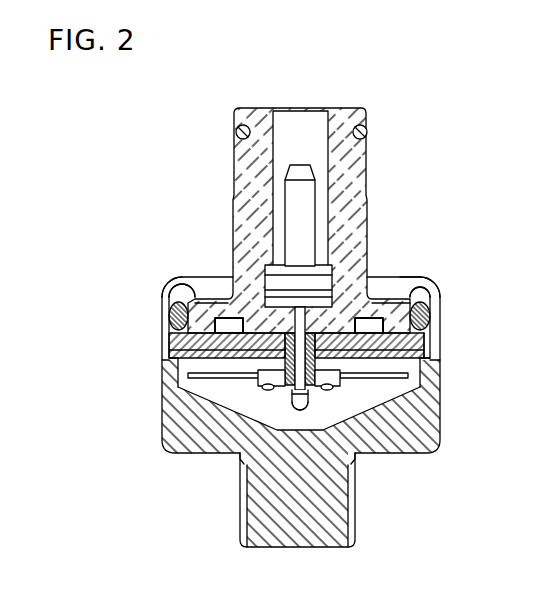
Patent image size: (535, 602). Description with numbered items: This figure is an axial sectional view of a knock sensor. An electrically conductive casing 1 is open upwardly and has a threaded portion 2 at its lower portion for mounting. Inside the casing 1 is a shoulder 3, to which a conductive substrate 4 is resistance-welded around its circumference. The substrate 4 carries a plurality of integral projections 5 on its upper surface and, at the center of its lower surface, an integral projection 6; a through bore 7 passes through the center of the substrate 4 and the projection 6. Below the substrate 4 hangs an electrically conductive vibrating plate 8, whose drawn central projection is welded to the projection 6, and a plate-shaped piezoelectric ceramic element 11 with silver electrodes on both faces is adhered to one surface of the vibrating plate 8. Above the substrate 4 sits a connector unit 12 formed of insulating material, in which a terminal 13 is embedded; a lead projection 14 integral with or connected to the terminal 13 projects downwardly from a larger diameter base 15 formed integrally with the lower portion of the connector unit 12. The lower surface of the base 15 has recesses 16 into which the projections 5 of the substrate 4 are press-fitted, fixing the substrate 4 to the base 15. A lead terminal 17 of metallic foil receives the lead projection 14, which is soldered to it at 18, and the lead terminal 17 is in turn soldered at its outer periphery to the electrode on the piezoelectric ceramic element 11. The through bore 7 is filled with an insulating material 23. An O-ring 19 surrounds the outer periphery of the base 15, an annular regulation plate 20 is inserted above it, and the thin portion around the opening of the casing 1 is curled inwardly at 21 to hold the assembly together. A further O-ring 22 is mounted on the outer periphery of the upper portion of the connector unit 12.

The casing 1 is at (428, 448).
The threaded portion 2 is at (340, 527).
The shoulder 3 is at (425, 365).
The conductive substrate 4 is at (421, 348).
The projections 5 is at (192, 282).
The projection 6 is at (218, 378).
The through bore 7 is at (182, 347).
The vibrating plate 8 is at (398, 376).
The piezoelectric ceramic element 11 is at (313, 382).
The connector unit 12 is at (368, 190).
The terminal 13 is at (296, 215).
The lead projection 14 is at (266, 389).
The base 15 is at (429, 297).
The recesses 16 is at (226, 318).
The lead terminal 17 is at (309, 398).
The solder 18 is at (303, 410).
The O-ring 19 is at (168, 318).
The annular regulation plate 20 is at (171, 300).
The curled portion 21 is at (420, 278).
The O-ring 22 is at (367, 128).
The insulating material 23 is at (262, 383).